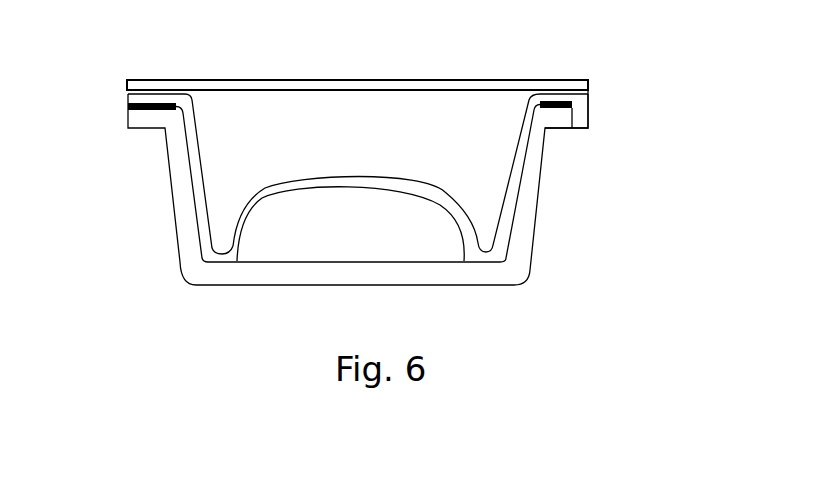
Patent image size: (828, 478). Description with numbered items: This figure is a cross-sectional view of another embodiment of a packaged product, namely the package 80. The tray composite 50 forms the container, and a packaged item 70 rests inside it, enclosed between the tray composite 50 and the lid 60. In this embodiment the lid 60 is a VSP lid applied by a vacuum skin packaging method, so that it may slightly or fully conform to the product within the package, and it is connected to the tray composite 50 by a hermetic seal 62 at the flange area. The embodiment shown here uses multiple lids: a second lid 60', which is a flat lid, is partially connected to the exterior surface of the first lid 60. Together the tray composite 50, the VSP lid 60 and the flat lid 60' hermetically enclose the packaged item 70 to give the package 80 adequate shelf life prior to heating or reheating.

The tray composite 50 is at (380, 285).
The lid 60 is at (315, 60).
The second lid 60' is at (357, 50).
The hermetic seal 62 is at (574, 130).
The packaged item 70 is at (340, 205).
The package 80 is at (605, 68).